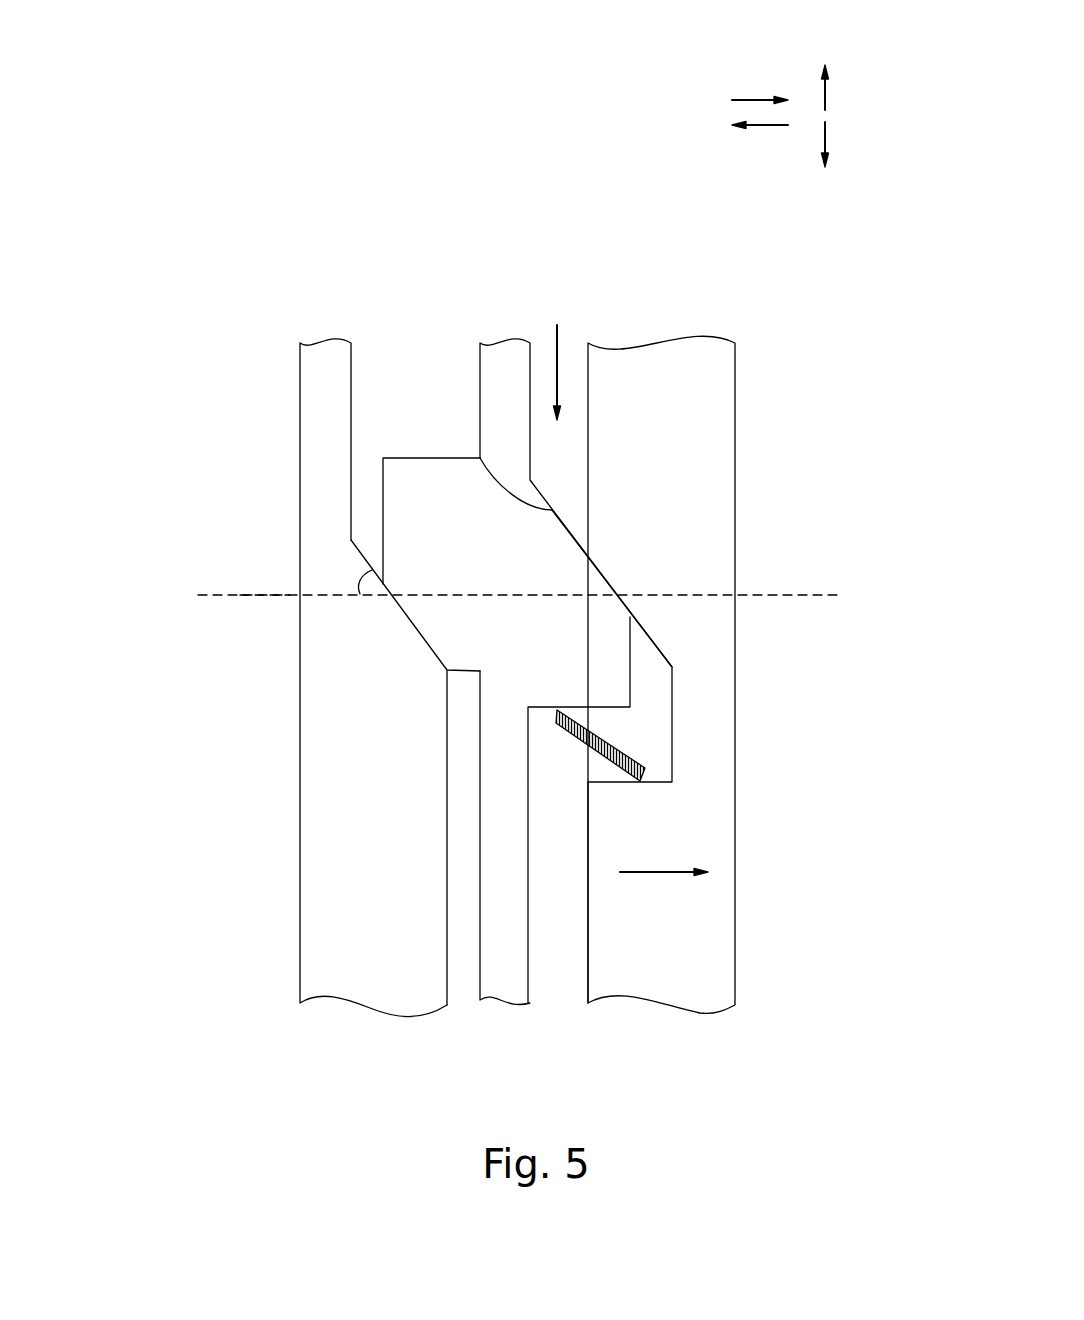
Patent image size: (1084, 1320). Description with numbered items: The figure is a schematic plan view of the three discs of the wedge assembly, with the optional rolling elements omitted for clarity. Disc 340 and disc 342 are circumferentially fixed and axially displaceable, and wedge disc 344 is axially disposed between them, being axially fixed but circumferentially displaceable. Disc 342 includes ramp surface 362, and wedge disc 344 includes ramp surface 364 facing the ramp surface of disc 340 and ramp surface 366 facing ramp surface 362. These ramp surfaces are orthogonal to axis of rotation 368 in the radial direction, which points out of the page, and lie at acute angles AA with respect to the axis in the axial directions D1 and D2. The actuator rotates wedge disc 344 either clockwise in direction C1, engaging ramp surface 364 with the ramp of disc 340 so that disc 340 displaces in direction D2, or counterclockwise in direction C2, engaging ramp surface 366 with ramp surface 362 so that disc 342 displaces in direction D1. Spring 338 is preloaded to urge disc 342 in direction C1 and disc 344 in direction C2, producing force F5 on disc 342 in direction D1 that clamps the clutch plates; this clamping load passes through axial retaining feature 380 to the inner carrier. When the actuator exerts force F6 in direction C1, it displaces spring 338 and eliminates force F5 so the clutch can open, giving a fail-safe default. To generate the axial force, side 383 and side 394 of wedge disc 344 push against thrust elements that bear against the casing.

The disc 340 is at (304, 333).
The wedge disc 344 is at (503, 326).
The disc 342 is at (681, 316).
The ramp surface 366 is at (470, 455).
The ramp surface 364 is at (401, 607).
The axial retaining feature 380 is at (358, 584).
The axis of rotation 368 is at (262, 597).
The ramp surface 362 is at (643, 630).
The spring 338 is at (627, 753).
The side of disc 344 383 is at (468, 946).
The side of disc 344 394 is at (540, 946).
The force F6 is at (558, 357).
The force F5 is at (662, 875).
The axial direction D1 is at (753, 97).
The axial direction D2 is at (770, 128).
The clockwise direction C1 is at (827, 138).
The counterclockwise direction C2 is at (827, 92).
The acute angle AA is at (360, 550).